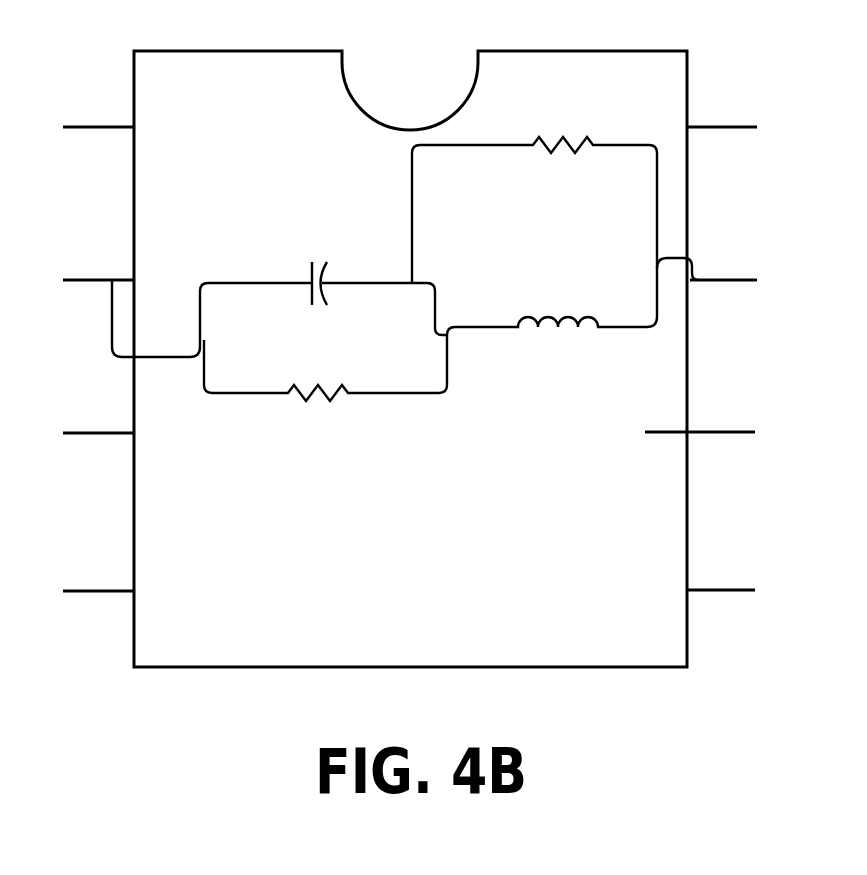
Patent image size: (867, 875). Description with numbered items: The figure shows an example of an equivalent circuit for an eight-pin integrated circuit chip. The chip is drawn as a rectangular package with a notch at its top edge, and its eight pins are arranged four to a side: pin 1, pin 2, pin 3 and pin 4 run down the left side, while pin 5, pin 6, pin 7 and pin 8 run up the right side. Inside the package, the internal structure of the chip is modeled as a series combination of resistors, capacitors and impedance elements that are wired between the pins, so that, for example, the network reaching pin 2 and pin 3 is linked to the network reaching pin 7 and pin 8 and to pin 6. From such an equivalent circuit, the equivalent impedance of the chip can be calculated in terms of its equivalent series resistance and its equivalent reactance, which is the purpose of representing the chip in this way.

The pin 1 is at (136, 120).
The pin 2 is at (127, 285).
The pin 3 is at (138, 428).
The pin 4 is at (138, 588).
The pin 5 is at (680, 585).
The pin 6 is at (679, 430).
The pin 7 is at (682, 275).
The pin 8 is at (682, 120).